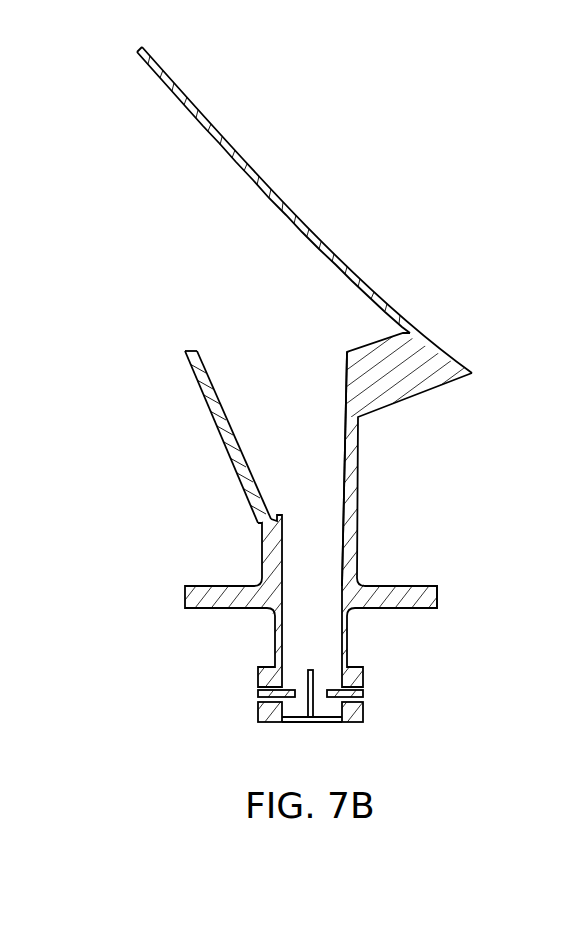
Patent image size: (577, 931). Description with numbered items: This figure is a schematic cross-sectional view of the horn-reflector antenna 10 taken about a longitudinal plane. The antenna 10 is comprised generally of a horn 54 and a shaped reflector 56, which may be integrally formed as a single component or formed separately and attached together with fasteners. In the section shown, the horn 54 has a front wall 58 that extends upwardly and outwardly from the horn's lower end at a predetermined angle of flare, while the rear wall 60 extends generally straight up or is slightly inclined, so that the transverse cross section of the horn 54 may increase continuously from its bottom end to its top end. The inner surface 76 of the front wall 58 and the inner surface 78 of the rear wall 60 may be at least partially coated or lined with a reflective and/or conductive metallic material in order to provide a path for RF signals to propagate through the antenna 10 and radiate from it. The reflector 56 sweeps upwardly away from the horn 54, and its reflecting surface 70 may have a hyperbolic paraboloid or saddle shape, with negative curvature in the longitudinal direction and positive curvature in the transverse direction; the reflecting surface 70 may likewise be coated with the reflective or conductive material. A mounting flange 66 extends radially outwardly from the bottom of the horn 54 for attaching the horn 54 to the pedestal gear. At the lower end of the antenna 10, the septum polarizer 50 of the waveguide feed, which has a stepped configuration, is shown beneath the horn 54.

The horn-reflector antenna 10 is at (478, 168).
The shaped reflector 56 is at (280, 196).
The reflecting surface 70 is at (287, 224).
The horn 54 is at (206, 409).
The inner surface 76 is at (216, 392).
The front wall 58 is at (232, 465).
The inner surface 78 is at (344, 410).
The rear wall 60 is at (360, 457).
The mounting flange 66 is at (437, 596).
The septum polarizer 50 is at (316, 676).